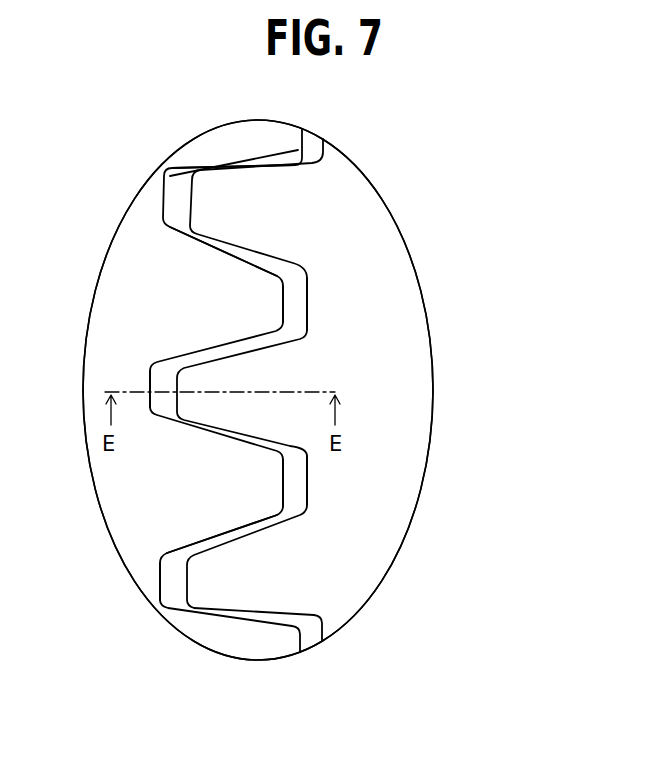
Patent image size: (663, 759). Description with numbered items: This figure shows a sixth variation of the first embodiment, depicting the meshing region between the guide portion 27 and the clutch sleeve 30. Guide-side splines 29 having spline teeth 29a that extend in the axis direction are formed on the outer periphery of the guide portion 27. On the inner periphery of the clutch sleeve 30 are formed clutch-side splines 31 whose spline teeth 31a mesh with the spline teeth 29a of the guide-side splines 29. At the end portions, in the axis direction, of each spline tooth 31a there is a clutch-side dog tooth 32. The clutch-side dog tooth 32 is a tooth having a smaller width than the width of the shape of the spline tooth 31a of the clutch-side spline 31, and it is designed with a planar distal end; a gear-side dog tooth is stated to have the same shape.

The guide portion 27 is at (350, 172).
The guide-side splines 29 is at (569, 232).
The spline teeth 29a is at (230, 208).
The clutch sleeve 30 is at (115, 275).
The clutch-side splines 31 is at (437, 392).
The spline tooth 31a is at (267, 262).
The clutch-side dog tooth 32 is at (270, 303).